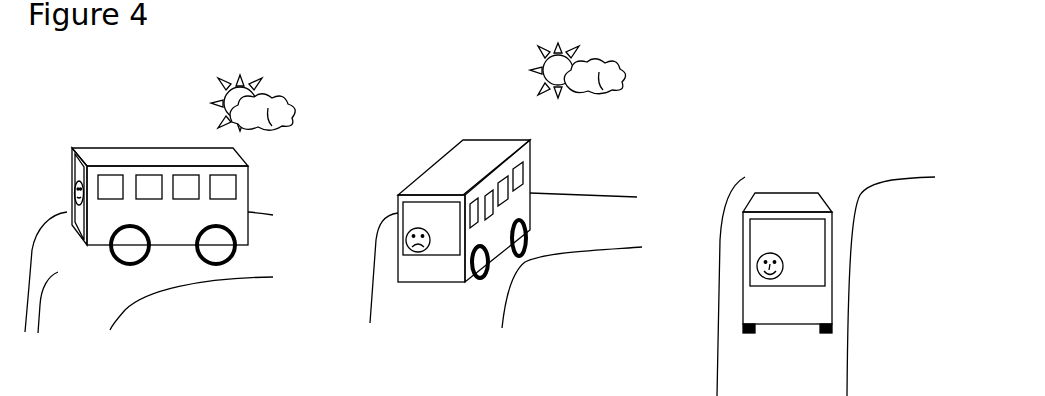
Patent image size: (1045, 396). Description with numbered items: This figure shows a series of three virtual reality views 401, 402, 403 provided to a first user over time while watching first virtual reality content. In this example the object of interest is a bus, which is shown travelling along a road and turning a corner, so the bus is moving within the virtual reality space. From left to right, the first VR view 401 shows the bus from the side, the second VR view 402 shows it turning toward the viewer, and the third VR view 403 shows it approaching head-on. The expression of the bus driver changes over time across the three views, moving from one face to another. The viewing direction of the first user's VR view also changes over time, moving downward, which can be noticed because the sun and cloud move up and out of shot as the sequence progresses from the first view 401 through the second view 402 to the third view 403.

The first VR view 401 is at (110, 123).
The second VR view 402 is at (418, 105).
The third VR view 403 is at (802, 115).